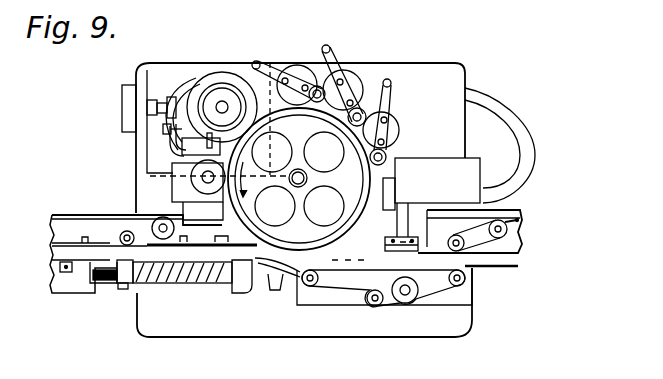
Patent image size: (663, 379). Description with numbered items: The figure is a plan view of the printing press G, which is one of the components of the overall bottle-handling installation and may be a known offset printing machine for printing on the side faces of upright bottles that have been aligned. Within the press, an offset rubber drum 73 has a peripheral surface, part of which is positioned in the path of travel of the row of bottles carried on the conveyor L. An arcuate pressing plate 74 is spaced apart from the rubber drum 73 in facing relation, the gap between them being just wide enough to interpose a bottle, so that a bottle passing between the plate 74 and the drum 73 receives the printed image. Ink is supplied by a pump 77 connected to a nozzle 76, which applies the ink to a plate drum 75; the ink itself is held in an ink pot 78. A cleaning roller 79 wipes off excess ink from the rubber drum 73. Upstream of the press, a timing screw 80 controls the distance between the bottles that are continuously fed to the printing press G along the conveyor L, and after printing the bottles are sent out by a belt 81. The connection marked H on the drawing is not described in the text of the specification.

The offset rubber drum 73 is at (376, 195).
The arcuate pressing plate 74 is at (263, 273).
The plate drum 75 is at (193, 178).
The nozzle 76 is at (168, 156).
The pump 77 is at (122, 97).
The ink pot 78 is at (217, 73).
The cleaning roller 79 is at (318, 86).
The timing screw 80 is at (190, 270).
The belt 81 is at (435, 302).
The printing press G is at (451, 64).
The hose H is at (478, 170).
The conveyor L is at (80, 252).